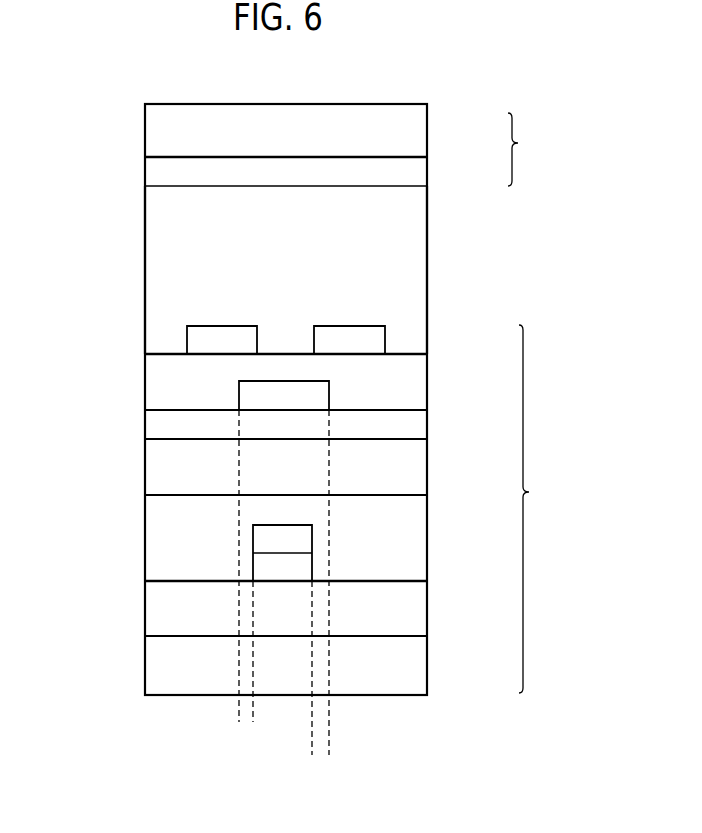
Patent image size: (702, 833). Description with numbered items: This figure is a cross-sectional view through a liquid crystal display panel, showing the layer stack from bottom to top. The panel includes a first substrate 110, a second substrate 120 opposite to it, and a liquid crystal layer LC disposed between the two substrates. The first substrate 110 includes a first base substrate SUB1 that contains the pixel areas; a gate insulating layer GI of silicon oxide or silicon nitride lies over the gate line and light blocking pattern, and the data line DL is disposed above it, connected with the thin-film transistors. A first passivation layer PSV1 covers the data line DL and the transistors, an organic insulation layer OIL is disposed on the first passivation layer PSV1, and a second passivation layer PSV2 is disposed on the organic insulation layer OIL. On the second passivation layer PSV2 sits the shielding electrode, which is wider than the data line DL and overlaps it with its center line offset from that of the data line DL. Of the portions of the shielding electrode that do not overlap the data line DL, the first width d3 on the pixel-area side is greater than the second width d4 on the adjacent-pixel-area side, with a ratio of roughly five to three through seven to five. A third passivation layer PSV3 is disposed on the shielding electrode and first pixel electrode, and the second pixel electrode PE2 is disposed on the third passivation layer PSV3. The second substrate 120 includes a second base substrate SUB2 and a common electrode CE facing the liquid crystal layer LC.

The second base substrate SUB2 is at (417, 127).
The common electrode CE is at (417, 170).
The second substrate 120 is at (529, 149).
The liquid crystal layer LC is at (417, 263).
The second pixel electrode PE2 is at (380, 339).
The third passivation layer PSV3 is at (417, 388).
The second passivation layer PSV2 is at (417, 428).
The organic insulation layer OIL is at (417, 472).
The first substrate 110 is at (538, 509).
The data line DL is at (265, 540).
The first passivation layer PSV1 is at (417, 537).
The gate insulating layer GI is at (417, 610).
The first base substrate SUB1 is at (417, 677).
The second width d4 is at (292, 711).
The first width d3 is at (370, 747).